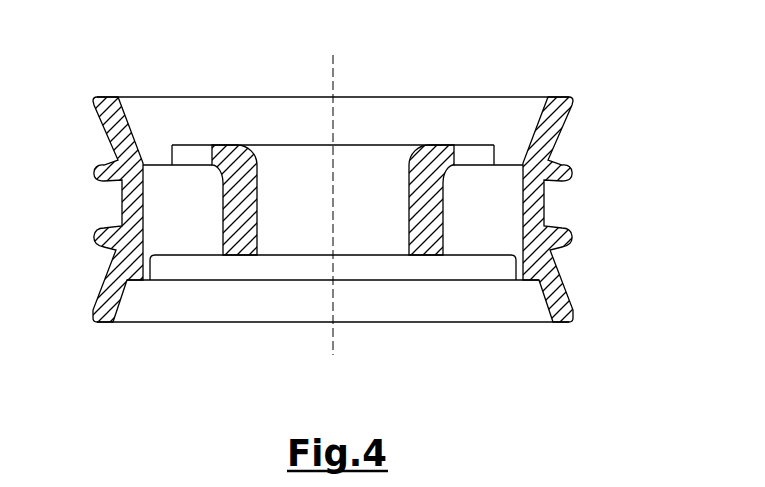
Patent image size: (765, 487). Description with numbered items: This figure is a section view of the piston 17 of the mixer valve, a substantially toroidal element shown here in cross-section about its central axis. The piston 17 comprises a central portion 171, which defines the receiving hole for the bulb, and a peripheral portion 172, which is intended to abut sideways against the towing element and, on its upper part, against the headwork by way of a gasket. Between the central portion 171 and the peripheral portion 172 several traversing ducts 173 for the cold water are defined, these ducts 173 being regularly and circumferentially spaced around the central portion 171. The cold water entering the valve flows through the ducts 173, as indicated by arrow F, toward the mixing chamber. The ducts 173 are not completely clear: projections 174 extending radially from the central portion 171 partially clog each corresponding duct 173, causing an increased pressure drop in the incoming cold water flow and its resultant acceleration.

The piston 17 is at (364, 222).
The central portion 171 is at (218, 256).
The peripheral portion 172 is at (122, 220).
The traversing ducts 173 is at (473, 233).
The radial projections 174 is at (468, 155).
The arrow F is at (160, 145).